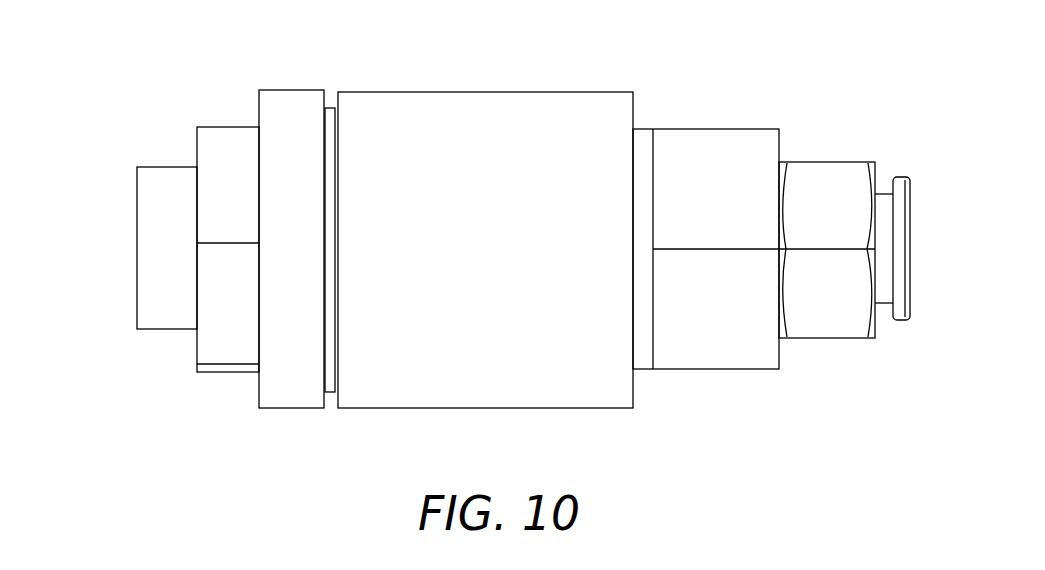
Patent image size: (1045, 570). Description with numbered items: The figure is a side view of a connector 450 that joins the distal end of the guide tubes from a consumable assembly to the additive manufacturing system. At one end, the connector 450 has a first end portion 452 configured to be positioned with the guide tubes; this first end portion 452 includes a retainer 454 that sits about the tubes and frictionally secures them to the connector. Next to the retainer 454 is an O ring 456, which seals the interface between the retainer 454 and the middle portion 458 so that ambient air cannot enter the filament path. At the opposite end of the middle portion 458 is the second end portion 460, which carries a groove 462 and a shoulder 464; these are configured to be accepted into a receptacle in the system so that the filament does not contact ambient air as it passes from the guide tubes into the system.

The connector 450 is at (294, 456).
The first end portion 452 is at (297, 80).
The retainer 454 is at (222, 138).
The O ring 456 is at (325, 107).
The middle portion 458 is at (587, 98).
The second end portion 460 is at (738, 384).
The groove 462 is at (876, 193).
The shoulder 464 is at (876, 327).